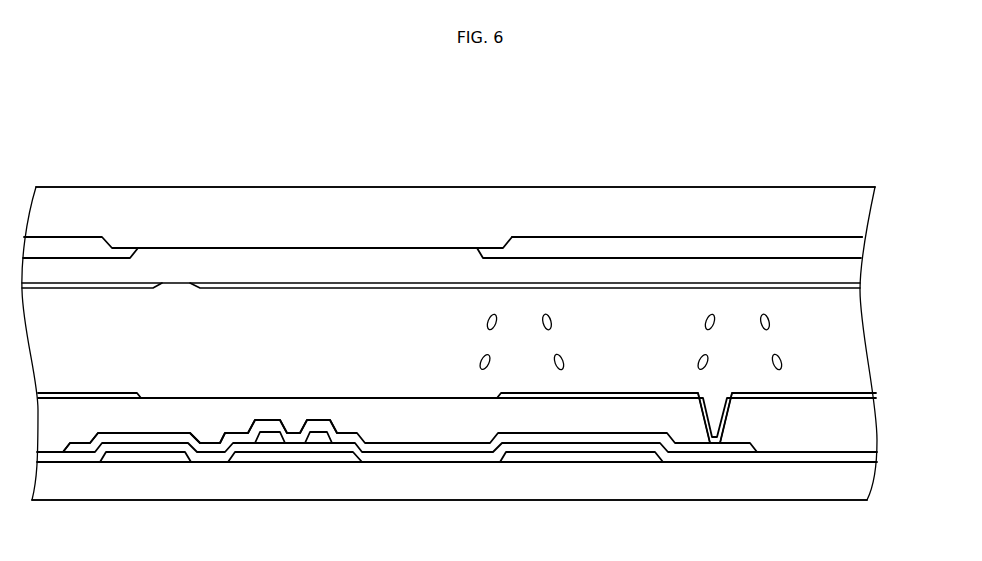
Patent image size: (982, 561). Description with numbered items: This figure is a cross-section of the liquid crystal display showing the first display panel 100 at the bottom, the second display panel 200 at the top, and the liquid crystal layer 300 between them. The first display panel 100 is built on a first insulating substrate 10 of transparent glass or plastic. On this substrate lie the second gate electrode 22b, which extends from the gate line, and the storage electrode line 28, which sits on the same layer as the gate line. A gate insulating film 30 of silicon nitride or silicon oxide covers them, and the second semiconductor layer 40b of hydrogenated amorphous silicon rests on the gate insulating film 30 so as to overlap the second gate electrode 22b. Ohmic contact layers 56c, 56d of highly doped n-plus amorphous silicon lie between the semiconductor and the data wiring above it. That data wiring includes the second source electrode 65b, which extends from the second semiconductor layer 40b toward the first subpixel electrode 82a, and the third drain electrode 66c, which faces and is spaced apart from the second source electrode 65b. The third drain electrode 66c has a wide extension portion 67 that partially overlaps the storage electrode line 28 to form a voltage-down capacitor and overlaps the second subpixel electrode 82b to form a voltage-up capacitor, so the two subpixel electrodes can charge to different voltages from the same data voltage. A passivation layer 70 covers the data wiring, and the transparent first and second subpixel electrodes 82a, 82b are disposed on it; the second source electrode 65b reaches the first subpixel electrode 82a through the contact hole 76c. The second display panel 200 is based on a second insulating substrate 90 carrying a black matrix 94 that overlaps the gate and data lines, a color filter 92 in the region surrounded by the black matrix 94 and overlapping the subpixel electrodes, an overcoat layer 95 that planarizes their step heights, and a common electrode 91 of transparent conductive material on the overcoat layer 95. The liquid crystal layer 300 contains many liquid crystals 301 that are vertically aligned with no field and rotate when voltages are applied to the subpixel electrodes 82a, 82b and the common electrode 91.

The first insulating substrate 10 is at (465, 490).
The second gate electrode 22b is at (293, 457).
The storage electrode line 28 is at (133, 457).
The gate insulating film 30 is at (373, 455).
The second semiconductor layer 40b is at (272, 443).
The ohmic contact layer 56c is at (318, 428).
The ohmic contact layer 56d is at (272, 430).
The second source electrode 65b is at (423, 448).
The third drain electrode 66c is at (202, 453).
The wide extension portion 67 is at (82, 450).
The passivation layer 70 is at (600, 435).
The contact hole 76c is at (716, 394).
The first subpixel electrode 82a is at (655, 393).
The second subpixel electrode 82b is at (97, 393).
The second insulating substrate 90 is at (238, 198).
The common electrode 91 is at (560, 285).
The color filter 92 is at (693, 243).
The black matrix 94 is at (340, 240).
The overcoat layer 95 is at (427, 258).
The first display panel 100 is at (895, 393).
The second display panel 200 is at (895, 187).
The liquid crystal layer 300 is at (895, 293).
The liquid crystals 301 is at (705, 322).